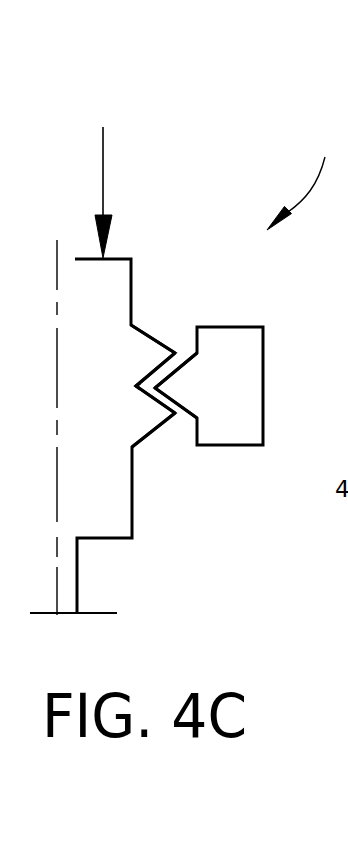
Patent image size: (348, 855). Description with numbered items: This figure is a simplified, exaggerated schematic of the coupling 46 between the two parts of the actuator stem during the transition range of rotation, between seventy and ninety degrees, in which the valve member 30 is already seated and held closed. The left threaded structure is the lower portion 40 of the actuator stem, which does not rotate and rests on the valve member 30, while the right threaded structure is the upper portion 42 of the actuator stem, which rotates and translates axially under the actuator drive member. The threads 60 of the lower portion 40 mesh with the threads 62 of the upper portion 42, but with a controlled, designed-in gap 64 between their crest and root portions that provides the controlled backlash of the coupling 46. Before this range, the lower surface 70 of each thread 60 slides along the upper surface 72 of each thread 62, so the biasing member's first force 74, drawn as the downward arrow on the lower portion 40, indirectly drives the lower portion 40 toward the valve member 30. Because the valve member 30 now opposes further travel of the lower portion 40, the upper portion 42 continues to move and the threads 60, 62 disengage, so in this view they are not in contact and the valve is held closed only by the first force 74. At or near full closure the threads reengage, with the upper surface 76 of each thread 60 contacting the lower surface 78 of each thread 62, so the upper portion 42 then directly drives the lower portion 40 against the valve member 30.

The valve member 30 is at (80, 615).
The lower portion of the actuator stem 40 is at (93, 493).
The upper portion of the actuator stem 42 is at (264, 365).
The coupling 46 is at (307, 180).
The threads of the lower portion 60 is at (143, 341).
The threads of the upper portion 62 is at (165, 363).
The controlled gap 64 is at (170, 409).
The lower surface of thread 70 is at (152, 377).
The upper surface of thread 72 is at (181, 362).
The first force 74 is at (104, 180).
The upper surface of thread 76 is at (158, 406).
The lower surface of thread 78 is at (190, 414).